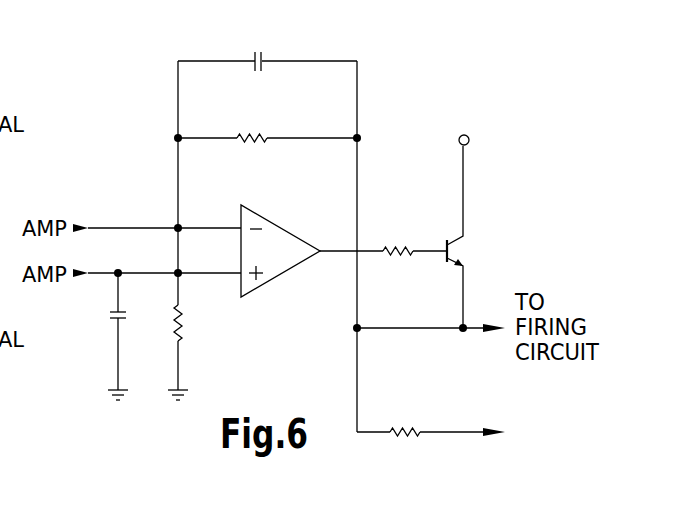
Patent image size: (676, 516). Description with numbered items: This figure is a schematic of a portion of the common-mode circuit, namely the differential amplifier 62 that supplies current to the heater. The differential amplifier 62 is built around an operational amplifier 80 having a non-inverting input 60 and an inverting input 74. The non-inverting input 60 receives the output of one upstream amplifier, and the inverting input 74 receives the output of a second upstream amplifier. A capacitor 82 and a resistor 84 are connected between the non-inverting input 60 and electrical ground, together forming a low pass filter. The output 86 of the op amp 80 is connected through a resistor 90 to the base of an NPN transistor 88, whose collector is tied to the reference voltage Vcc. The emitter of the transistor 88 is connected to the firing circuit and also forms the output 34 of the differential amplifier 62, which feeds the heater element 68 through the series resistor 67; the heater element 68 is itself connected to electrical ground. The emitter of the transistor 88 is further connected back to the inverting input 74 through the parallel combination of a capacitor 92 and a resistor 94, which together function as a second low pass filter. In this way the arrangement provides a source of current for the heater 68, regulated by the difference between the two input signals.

The output 34 is at (357, 383).
The non-inverting input 60 is at (154, 271).
The differential amplifier 62 is at (143, 146).
The series resistor 67 is at (405, 437).
The heater element 68 is at (564, 431).
The inverting input 74 is at (152, 226).
The operational amplifier 80 is at (278, 238).
The capacitor 82 is at (110, 316).
The resistor 84 is at (184, 322).
The output 86 is at (340, 250).
The NPN transistor 88 is at (458, 252).
The resistor 90 is at (400, 258).
The capacitor 92 is at (258, 50).
The resistor 94 is at (252, 133).